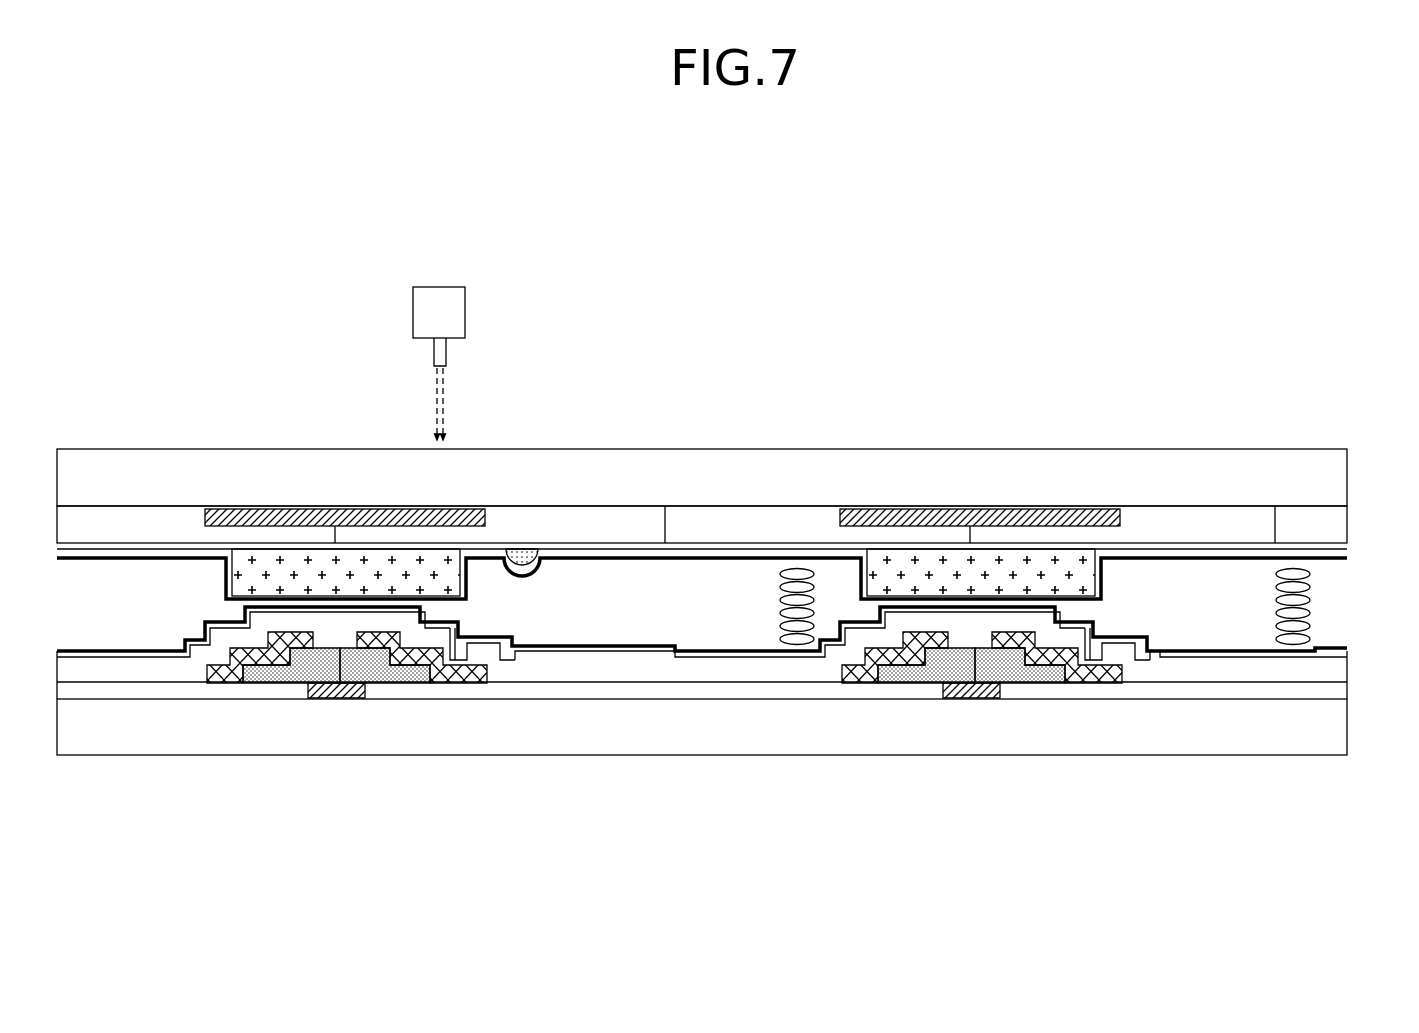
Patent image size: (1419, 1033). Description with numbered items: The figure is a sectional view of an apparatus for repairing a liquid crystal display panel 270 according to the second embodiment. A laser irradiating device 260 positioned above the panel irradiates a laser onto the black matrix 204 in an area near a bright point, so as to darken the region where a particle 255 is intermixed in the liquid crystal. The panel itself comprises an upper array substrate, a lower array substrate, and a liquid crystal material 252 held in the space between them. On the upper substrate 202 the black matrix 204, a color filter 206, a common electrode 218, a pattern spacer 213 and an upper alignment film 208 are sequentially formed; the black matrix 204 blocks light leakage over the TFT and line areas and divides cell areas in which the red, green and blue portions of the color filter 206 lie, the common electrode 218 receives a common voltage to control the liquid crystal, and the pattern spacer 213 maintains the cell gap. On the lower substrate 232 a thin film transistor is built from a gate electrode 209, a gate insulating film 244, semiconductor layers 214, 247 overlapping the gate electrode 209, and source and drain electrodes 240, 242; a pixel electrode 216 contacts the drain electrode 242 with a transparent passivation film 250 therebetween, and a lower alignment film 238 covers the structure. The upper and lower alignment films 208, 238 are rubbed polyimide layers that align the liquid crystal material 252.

The upper substrate 202 is at (1338, 470).
The black matrix 204 is at (920, 508).
The color filter 206 is at (1338, 521).
The upper alignment film 208 is at (1345, 560).
The gate electrode 209 is at (336, 697).
The pattern spacer 213 is at (990, 556).
The semiconductor layer 214 is at (258, 670).
The pixel electrode 216 is at (506, 658).
The common electrode 218 is at (1340, 548).
The lower substrate 232 is at (1338, 725).
The lower alignment film 238 is at (1345, 653).
The source electrode 240 is at (288, 665).
The drain electrode 242 is at (443, 660).
The gate insulating film 244 is at (672, 690).
The semiconductor layer 247 is at (390, 665).
The passivation film 250 is at (572, 668).
The liquid crystal material 252 is at (1277, 583).
The particle 255 is at (540, 574).
The laser irradiating device 260 is at (465, 313).
The liquid crystal display panel 270 is at (1200, 392).